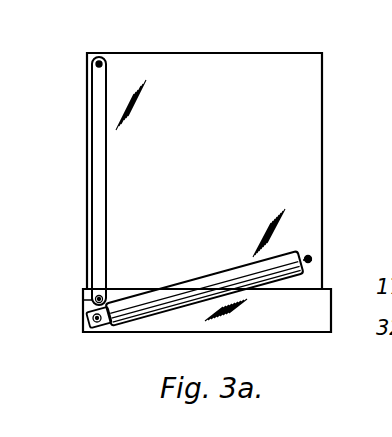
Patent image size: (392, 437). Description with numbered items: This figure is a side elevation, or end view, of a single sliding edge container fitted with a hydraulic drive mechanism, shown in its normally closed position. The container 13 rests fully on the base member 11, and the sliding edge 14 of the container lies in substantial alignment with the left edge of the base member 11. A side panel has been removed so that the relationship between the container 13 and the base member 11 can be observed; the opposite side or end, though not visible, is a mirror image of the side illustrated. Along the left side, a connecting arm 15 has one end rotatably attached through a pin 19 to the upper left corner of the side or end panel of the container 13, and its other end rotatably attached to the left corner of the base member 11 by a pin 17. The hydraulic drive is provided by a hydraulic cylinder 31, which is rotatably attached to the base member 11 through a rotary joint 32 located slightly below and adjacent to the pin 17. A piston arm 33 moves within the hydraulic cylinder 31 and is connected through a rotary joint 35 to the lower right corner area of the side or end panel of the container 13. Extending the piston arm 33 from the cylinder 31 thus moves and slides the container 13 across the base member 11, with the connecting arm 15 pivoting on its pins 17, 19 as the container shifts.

The base member 11 is at (282, 333).
The container 13 is at (226, 66).
The sliding edge 14 is at (85, 288).
The connecting arm 15 is at (99, 107).
The pin 17 is at (94, 300).
The pin 19 is at (100, 61).
The hydraulic cylinder 31 is at (127, 301).
The rotary joint 32 is at (92, 318).
The piston arm 33 is at (304, 255).
The rotary joint 35 is at (312, 260).